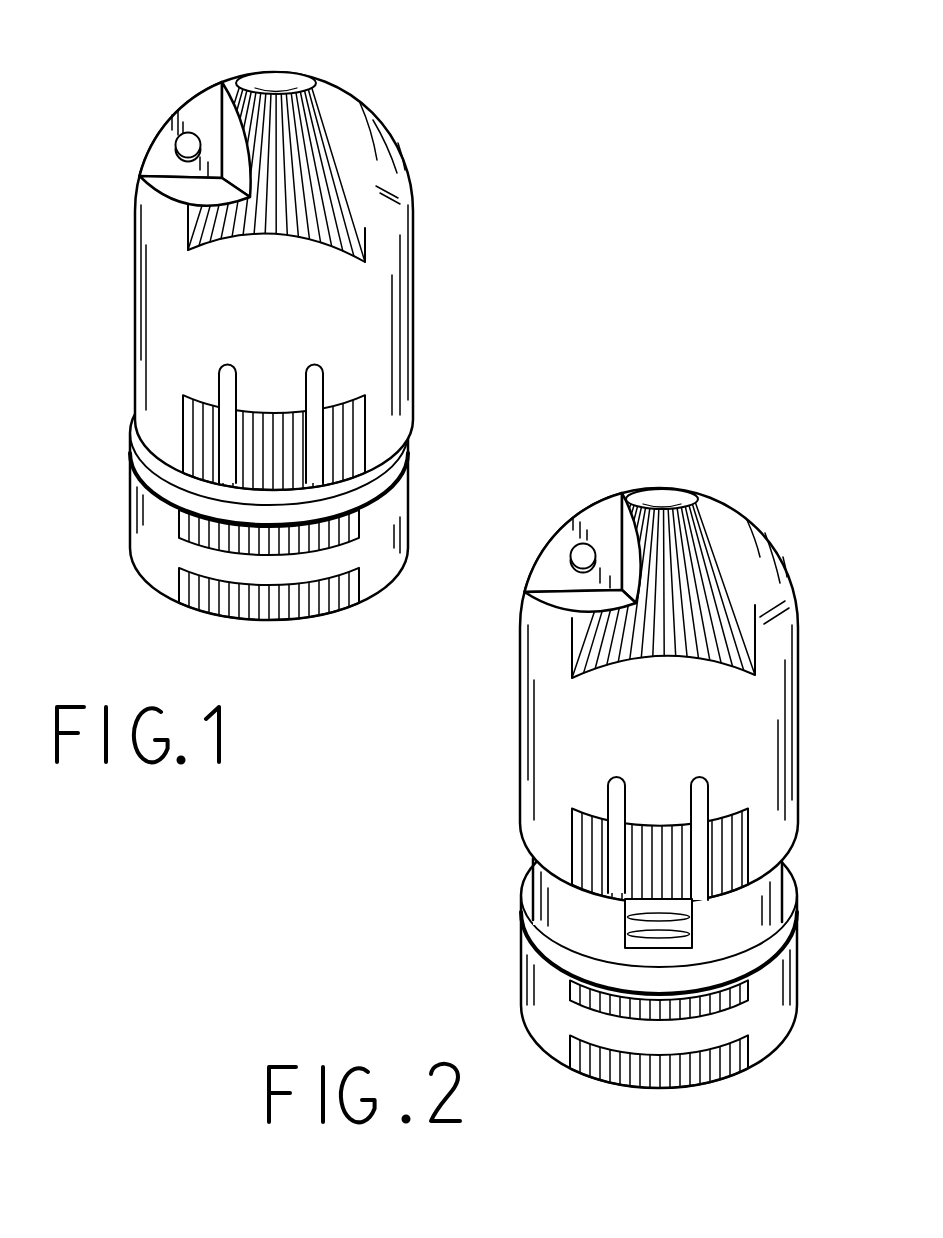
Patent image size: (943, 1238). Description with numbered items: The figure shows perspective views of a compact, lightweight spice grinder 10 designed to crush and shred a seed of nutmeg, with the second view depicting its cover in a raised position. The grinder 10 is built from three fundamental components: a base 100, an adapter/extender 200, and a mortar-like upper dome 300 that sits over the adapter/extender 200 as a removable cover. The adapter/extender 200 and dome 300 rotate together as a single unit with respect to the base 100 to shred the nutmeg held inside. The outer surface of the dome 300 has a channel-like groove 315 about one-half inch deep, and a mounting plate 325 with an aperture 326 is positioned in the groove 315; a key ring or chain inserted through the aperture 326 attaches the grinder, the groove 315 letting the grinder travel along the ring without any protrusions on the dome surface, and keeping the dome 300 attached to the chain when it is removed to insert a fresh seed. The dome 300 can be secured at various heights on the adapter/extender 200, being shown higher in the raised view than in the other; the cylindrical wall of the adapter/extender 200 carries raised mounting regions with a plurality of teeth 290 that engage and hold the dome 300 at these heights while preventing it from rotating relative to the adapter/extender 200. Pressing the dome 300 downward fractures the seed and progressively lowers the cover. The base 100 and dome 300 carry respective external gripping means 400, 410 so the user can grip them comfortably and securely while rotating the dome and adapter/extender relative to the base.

In FIG. 1, the spice grinder 10 is at (432, 188).
In FIG. 2, the spice grinder 10 is at (793, 550).
In FIG. 1, the base 100 is at (128, 512).
In FIG. 2, the base 100 is at (520, 980).
In FIG. 1, the adapter/extender 200 is at (377, 467).
In FIG. 2, the adapter/extender 200 is at (562, 907).
In FIG. 2, the teeth 290 is at (622, 925).
In FIG. 1, the upper dome 300 is at (358, 310).
In FIG. 2, the upper dome 300 is at (522, 793).
In FIG. 1, the groove 315 is at (219, 82).
In FIG. 2, the groove 315 is at (607, 508).
In FIG. 1, the mounting plate 325 is at (150, 156).
In FIG. 1, the aperture 326 is at (185, 147).
In FIG. 2, the aperture 326 is at (580, 556).
In FIG. 1, the external gripping means 400 is at (365, 520).
In FIG. 2, the external gripping means 400 is at (753, 1045).
In FIG. 1, the external gripping means 410 is at (338, 107).
In FIG. 2, the external gripping means 410 is at (713, 517).